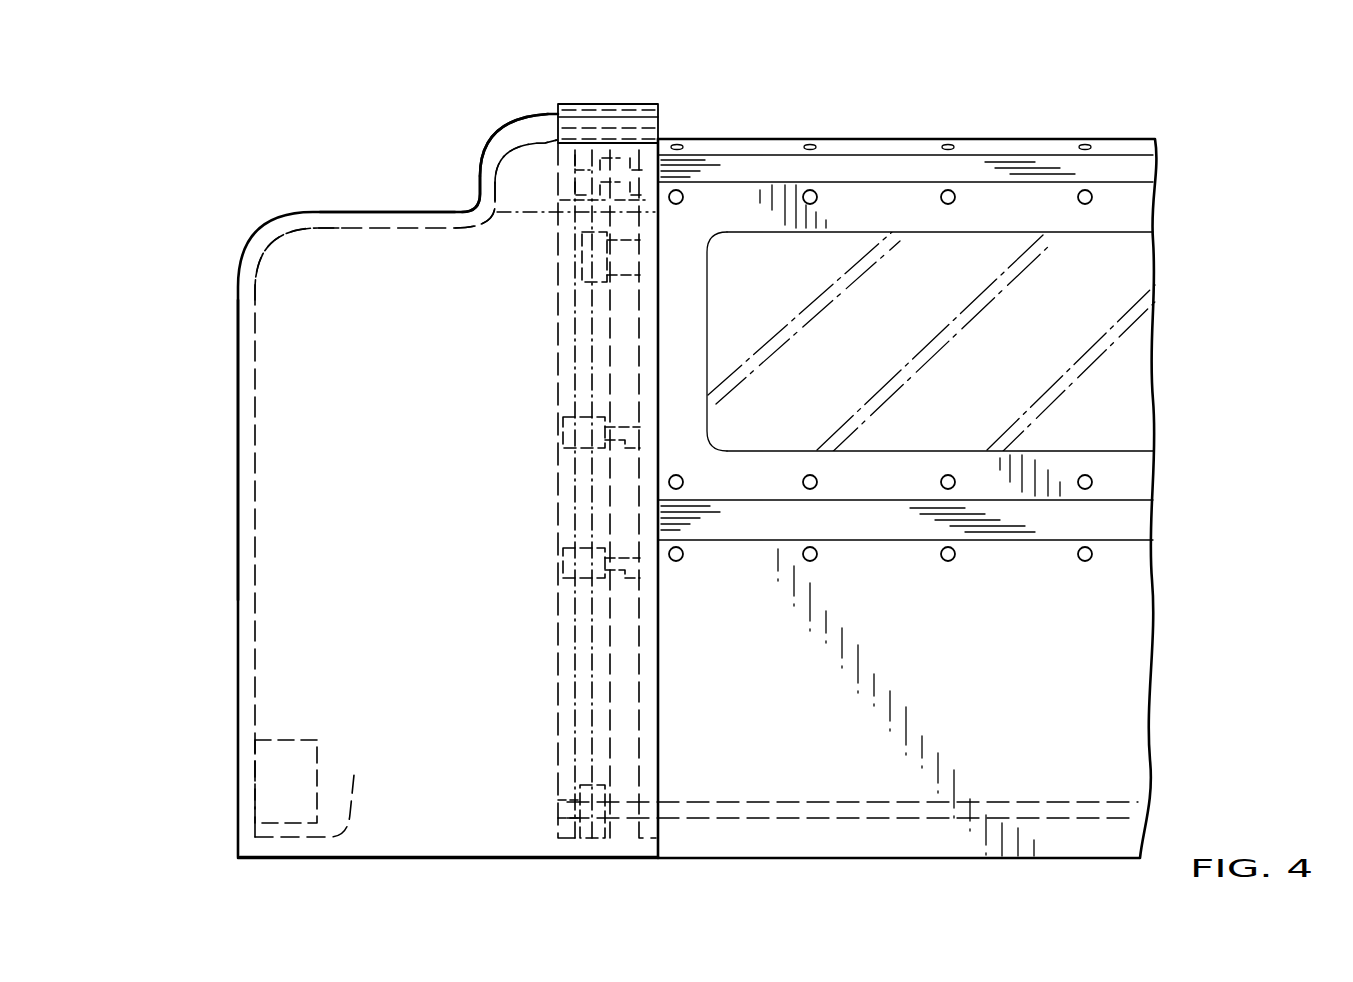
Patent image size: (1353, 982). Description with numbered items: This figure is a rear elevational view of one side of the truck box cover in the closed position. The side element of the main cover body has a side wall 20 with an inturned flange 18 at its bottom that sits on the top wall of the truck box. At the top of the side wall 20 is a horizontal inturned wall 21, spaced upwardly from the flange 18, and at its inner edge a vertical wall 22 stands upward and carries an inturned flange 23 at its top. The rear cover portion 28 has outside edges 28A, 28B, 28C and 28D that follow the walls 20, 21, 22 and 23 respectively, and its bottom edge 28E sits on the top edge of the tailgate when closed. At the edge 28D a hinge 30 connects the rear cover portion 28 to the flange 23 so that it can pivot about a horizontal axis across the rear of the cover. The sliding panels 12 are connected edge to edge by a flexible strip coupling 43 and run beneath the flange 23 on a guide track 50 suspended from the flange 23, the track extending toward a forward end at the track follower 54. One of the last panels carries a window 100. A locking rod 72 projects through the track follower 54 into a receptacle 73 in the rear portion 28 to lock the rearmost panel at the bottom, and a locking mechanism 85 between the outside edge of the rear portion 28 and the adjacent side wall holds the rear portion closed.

The sliding panels 12 is at (937, 122).
The inturned flange 18 is at (356, 790).
The side wall 20 is at (256, 500).
The horizontal inturned wall 21 is at (337, 226).
The vertical wall 22 is at (480, 176).
The inturned flange 23 is at (552, 100).
The rear cover portion 28 is at (298, 545).
The outside edge 28A is at (238, 353).
The outside edge 28B is at (355, 212).
The outside edge 28C is at (494, 140).
The outside edge 28D is at (524, 111).
The bottom edge 28E is at (432, 860).
The hinge 30 is at (662, 106).
The flexible strip coupling 43 is at (1136, 526).
The guide track 50 is at (547, 338).
The track follower 54 is at (613, 785).
The locking rod 72 is at (845, 799).
The receptacle 73 is at (561, 808).
The locking mechanism 85 is at (295, 738).
The window 100 is at (1106, 375).